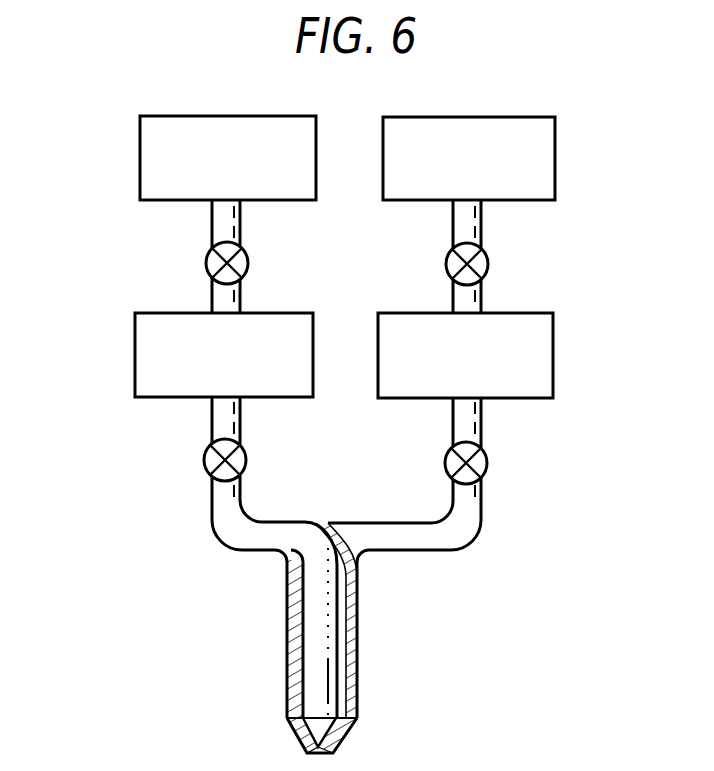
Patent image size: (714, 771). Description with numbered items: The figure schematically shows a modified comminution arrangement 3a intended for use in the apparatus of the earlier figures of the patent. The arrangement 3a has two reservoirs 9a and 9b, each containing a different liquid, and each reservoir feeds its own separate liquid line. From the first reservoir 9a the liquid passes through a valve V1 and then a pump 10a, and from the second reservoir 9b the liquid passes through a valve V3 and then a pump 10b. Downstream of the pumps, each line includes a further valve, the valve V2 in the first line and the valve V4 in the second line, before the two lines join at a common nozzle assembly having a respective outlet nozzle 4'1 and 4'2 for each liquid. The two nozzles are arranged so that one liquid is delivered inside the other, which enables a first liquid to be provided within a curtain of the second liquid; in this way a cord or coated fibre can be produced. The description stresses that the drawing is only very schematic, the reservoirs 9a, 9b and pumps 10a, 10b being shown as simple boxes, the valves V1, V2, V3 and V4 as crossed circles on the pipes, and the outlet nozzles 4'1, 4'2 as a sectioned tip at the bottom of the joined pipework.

The comminution arrangement 3a is at (570, 315).
The reservoir 9a is at (140, 157).
The reservoir 9b is at (555, 154).
The pump 10a is at (135, 352).
The pump 10b is at (553, 358).
The valve V1 is at (206, 263).
The valve V2 is at (204, 460).
The valve V3 is at (488, 264).
The valve V4 is at (488, 463).
The outlet nozzle 4'1 is at (371, 739).
The outlet nozzle 4'2 is at (259, 729).